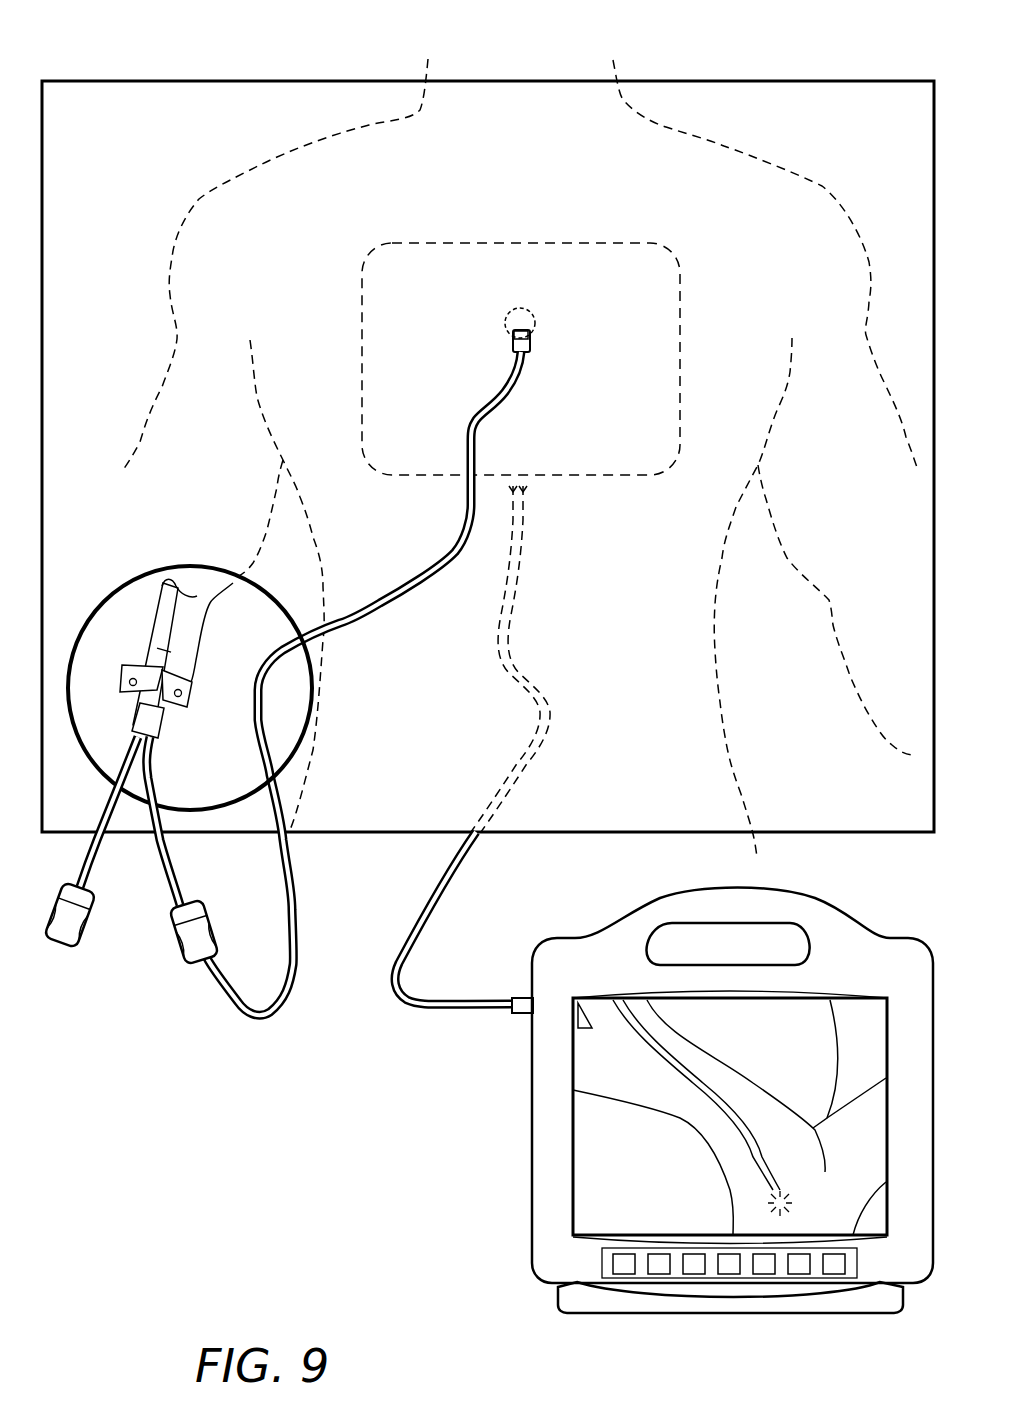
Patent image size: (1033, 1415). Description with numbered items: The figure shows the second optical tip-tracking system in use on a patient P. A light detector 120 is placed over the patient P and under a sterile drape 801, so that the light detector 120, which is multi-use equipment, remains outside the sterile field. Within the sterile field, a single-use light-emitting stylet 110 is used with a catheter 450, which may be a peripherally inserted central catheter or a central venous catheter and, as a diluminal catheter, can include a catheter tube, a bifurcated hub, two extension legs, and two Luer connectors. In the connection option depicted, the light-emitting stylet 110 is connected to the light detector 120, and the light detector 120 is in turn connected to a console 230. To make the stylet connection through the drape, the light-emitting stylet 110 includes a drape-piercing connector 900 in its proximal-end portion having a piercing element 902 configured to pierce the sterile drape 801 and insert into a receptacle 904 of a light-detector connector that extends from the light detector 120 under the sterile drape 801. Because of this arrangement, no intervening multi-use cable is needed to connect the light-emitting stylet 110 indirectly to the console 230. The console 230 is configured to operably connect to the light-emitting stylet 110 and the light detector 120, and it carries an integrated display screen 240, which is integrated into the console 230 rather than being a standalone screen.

The sterile drape 801 is at (210, 107).
The patient P is at (620, 68).
The light detector 120 is at (560, 238).
The receptacle 904 is at (537, 315).
The piercing element 902 is at (508, 334).
The drape-piercing connector 900 is at (540, 350).
The light-emitting stylet 110 is at (239, 1021).
The catheter 450 is at (93, 929).
The integrated display screen 240 is at (597, 1203).
The console 230 is at (541, 1283).